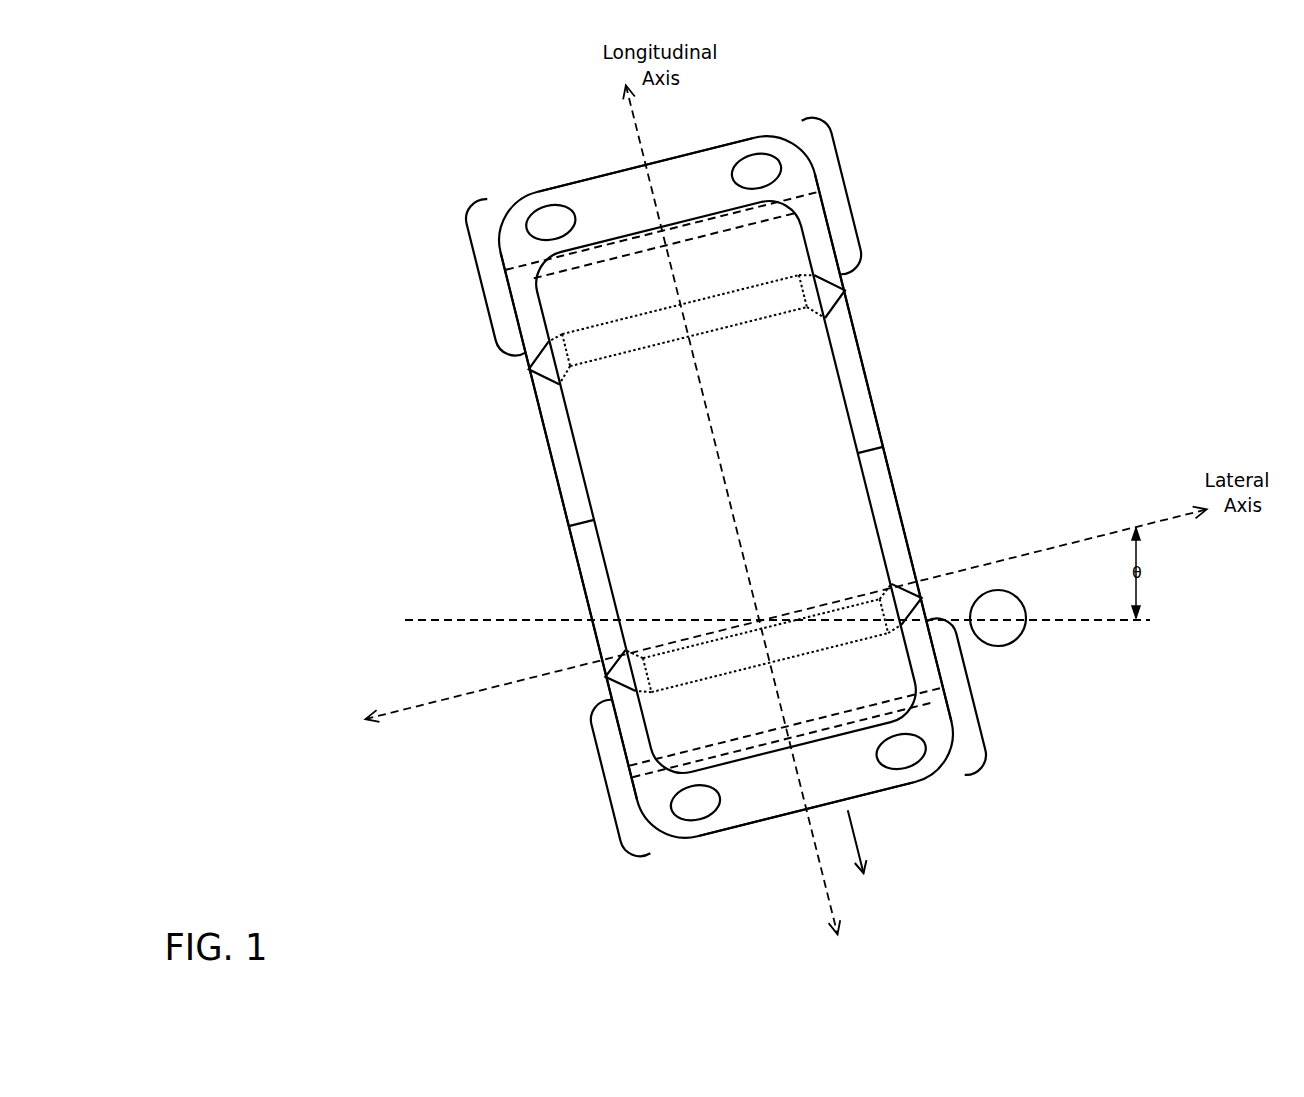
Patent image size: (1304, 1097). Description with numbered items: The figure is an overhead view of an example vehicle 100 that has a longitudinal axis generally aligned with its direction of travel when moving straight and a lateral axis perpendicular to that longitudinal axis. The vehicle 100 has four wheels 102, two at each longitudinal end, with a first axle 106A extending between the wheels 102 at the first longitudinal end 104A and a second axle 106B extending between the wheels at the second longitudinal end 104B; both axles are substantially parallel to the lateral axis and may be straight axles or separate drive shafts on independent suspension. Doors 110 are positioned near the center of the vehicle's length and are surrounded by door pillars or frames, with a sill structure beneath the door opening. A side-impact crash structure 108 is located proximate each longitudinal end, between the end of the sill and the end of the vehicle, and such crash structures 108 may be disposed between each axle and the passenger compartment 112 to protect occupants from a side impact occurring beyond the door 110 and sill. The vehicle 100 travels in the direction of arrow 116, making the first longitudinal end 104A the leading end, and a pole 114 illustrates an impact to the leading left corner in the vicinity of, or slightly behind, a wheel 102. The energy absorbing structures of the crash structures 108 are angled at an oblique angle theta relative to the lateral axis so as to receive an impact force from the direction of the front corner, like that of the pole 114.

The vehicle 100 is at (929, 284).
The wheels 102 is at (479, 226).
The first longitudinal end 104A is at (738, 828).
The second longitudinal end 104B is at (608, 167).
The first axle 106A is at (646, 767).
The second axle 106B is at (522, 275).
The side-impact crash structure 108 is at (783, 317).
The doors 110 is at (566, 483).
The passenger compartment 112 is at (710, 499).
The pole 114 is at (1007, 645).
The arrow 116 is at (850, 838).